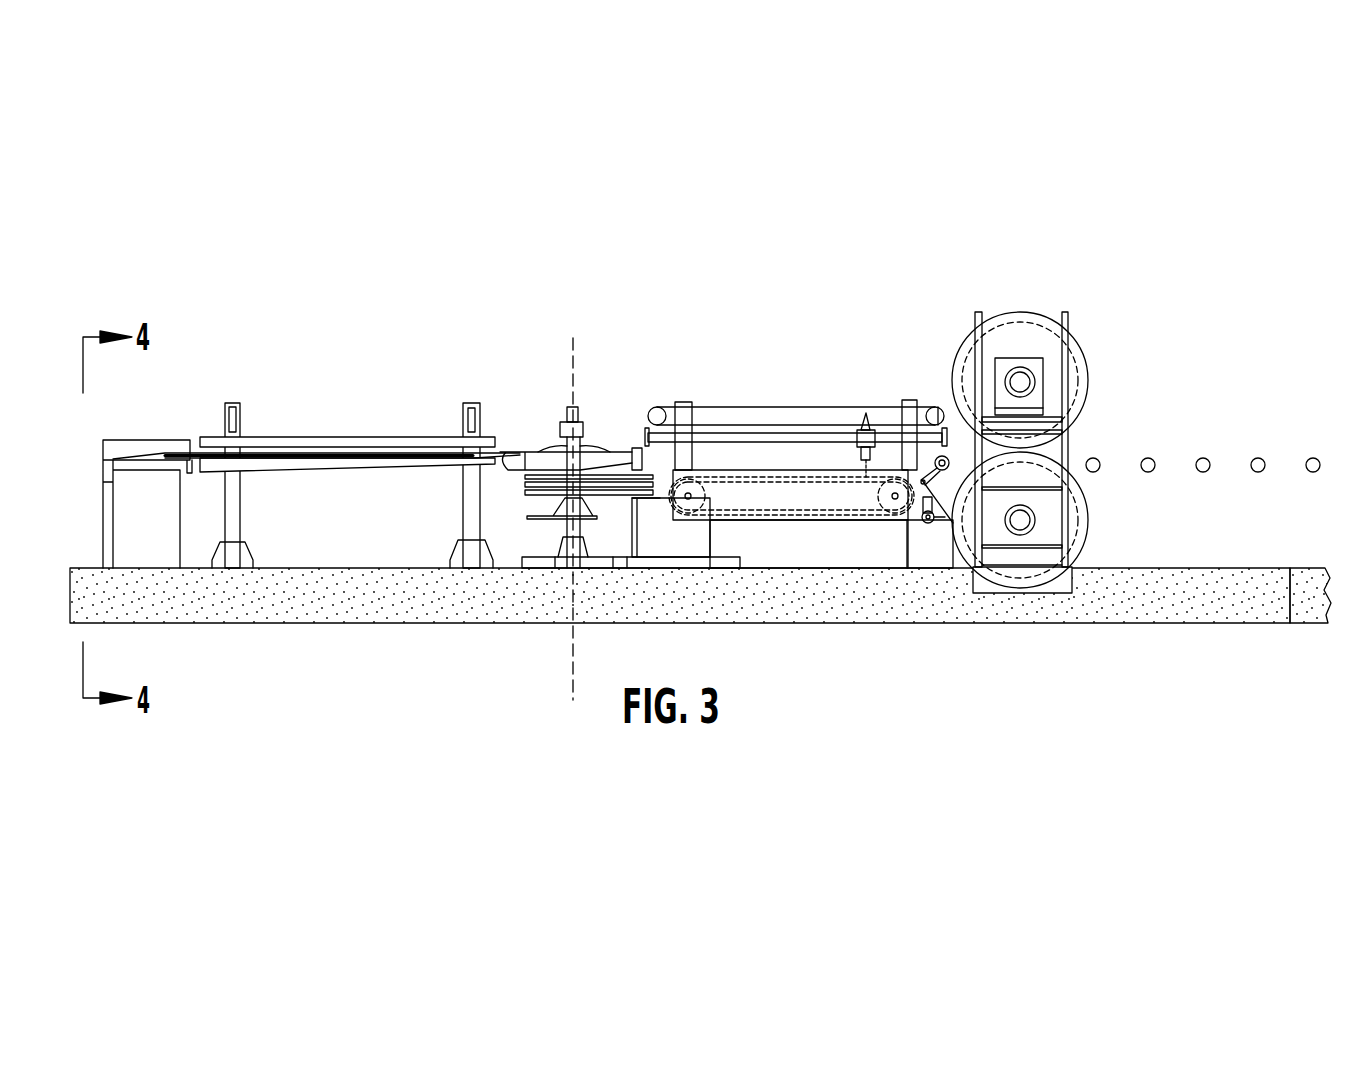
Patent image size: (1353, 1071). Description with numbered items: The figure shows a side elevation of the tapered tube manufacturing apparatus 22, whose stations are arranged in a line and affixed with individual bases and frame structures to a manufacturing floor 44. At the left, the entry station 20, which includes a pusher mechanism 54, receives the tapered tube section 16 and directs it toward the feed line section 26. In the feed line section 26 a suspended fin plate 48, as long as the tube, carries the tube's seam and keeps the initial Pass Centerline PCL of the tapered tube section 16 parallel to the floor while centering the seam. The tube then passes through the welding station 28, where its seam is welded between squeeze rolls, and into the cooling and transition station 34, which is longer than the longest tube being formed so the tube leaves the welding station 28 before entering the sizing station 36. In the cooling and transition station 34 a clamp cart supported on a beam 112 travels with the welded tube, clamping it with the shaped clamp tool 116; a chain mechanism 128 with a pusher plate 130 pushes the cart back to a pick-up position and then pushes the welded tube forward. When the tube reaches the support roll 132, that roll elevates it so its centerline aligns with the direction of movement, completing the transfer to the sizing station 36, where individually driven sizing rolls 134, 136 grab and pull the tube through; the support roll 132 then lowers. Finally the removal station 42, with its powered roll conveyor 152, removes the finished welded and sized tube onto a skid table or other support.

The entry station 20 is at (147, 427).
The pusher mechanism 54 is at (235, 402).
The suspended fin plate 48 is at (437, 443).
The tapered tube section 16 is at (347, 460).
The Pass Centerline PCL is at (277, 455).
The feed line section 26 is at (316, 412).
The welding station 28 is at (602, 427).
The tapered tube manufacturing apparatus 22 is at (826, 410).
The cooling and transition station 34 is at (799, 415).
The beam 112 is at (717, 437).
The chain mechanism 128 is at (780, 497).
The shaped clamp tool 116 is at (863, 418).
The pusher plate 130 is at (868, 465).
The support roll 132 is at (953, 452).
The sizing station 36 is at (1052, 420).
The sizing roll 134 is at (1072, 378).
The sizing roll 136 is at (1072, 525).
The removal station 42 is at (1203, 425).
The powered roll conveyor 152 is at (1096, 471).
The manufacturing floor 44 is at (250, 603).